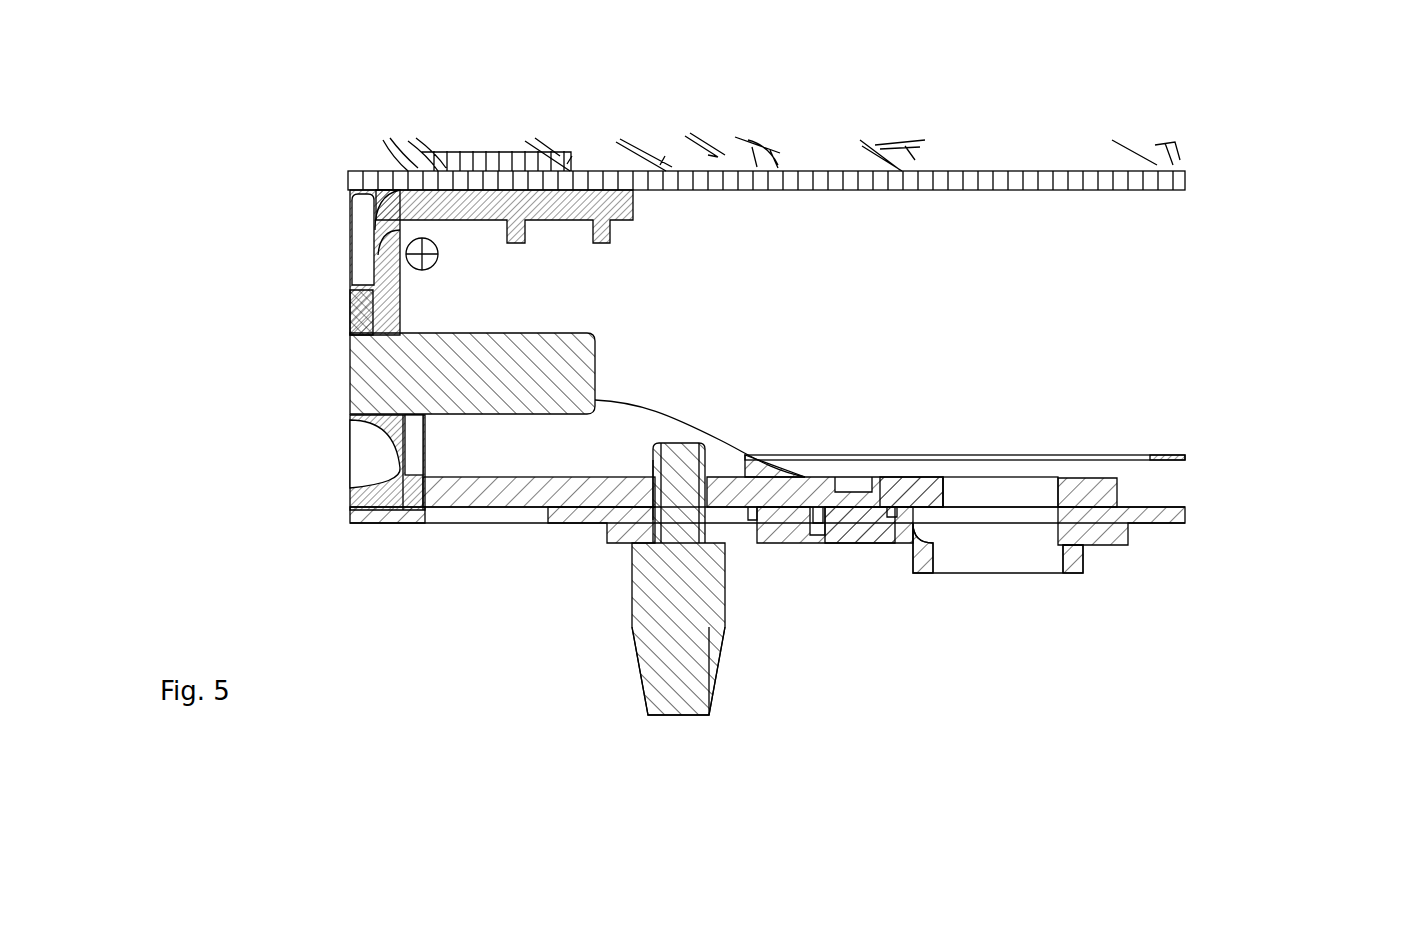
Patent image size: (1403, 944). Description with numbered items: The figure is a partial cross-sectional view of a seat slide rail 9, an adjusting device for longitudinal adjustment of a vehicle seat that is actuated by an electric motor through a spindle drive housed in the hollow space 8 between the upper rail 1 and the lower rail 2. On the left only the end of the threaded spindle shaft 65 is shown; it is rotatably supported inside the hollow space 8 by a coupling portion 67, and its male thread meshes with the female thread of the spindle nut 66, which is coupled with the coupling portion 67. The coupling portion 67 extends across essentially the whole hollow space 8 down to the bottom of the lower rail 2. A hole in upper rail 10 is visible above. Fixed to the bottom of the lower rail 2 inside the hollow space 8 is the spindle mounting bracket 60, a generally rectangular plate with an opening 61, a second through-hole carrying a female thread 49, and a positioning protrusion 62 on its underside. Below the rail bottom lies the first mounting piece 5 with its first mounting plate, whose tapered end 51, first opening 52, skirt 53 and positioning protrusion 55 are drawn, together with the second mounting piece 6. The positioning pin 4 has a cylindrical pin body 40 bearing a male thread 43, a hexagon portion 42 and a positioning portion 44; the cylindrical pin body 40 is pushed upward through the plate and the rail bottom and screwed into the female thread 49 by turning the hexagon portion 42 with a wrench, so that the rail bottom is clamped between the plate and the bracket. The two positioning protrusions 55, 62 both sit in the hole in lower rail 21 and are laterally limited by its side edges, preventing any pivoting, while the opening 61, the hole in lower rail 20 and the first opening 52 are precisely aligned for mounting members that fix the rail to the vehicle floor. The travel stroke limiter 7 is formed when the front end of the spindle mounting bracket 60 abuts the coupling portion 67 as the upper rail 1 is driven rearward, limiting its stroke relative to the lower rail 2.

The upper rail 1 is at (1028, 200).
The lower rail 2 is at (1156, 502).
The positioning pin 4 is at (719, 661).
The first mounting piece 5 is at (1088, 578).
The second mounting piece 6 is at (1090, 480).
The travel stroke limiter/stop feature 7 is at (415, 440).
The hollow space 8 is at (1200, 268).
The seat slide rail 9 is at (812, 123).
The hole in upper rail 10 is at (537, 208).
The hole in lower rail 20 is at (505, 515).
The hole in lower rail 21 is at (886, 520).
The cylindrical pin body 40 is at (683, 443).
The hexagon portion 42 is at (632, 647).
The male thread 43 is at (695, 455).
The positioning portion 44 is at (645, 690).
The female thread 49 is at (653, 463).
The tapered end of first mounting plate 51 is at (605, 545).
The first opening 52 is at (977, 565).
The skirt 53 is at (1072, 557).
The positioning protrusion 55 is at (778, 520).
The spindle mounting bracket 60 is at (767, 523).
The opening 61 is at (962, 483).
The positioning protrusion 62 is at (819, 518).
The spindle shaft 65 is at (563, 372).
The spindle nut 66 is at (347, 317).
The coupling portion 67 is at (388, 283).